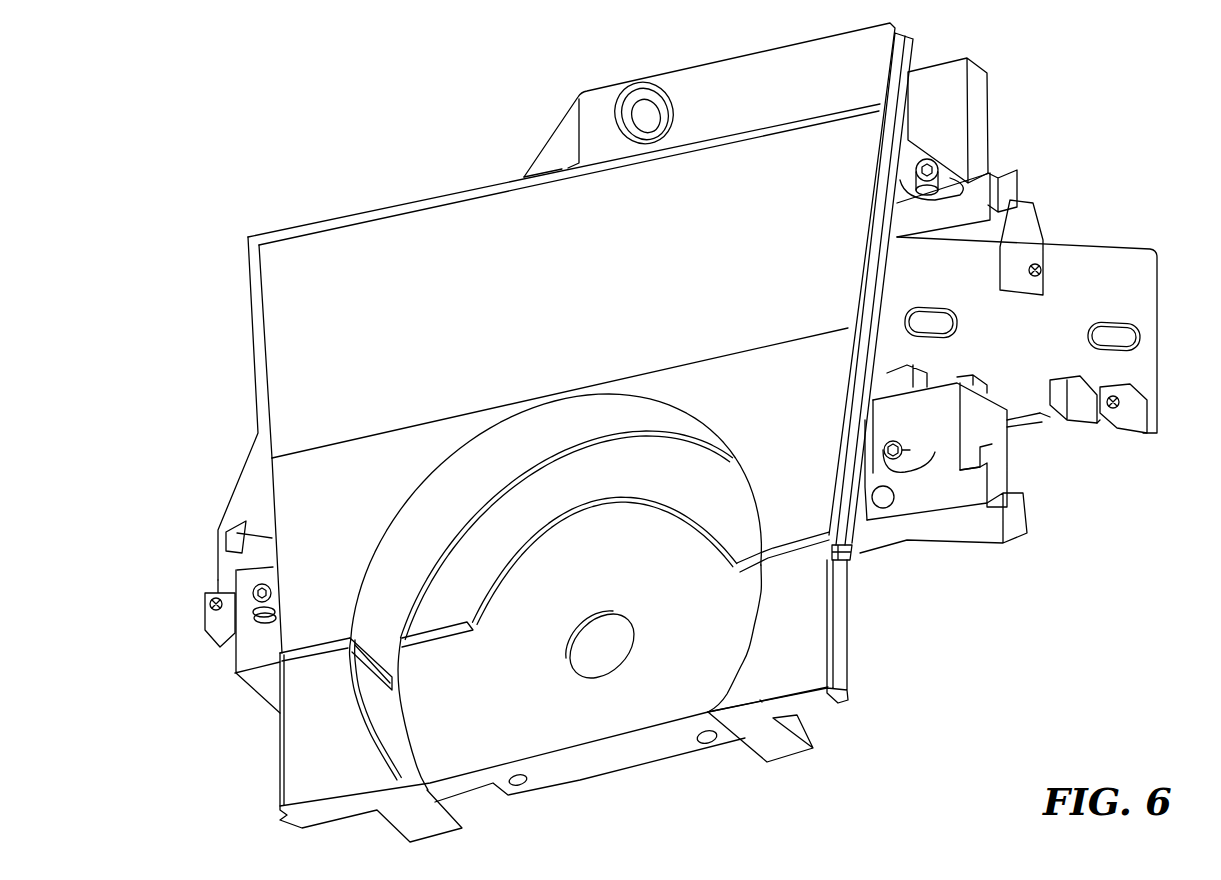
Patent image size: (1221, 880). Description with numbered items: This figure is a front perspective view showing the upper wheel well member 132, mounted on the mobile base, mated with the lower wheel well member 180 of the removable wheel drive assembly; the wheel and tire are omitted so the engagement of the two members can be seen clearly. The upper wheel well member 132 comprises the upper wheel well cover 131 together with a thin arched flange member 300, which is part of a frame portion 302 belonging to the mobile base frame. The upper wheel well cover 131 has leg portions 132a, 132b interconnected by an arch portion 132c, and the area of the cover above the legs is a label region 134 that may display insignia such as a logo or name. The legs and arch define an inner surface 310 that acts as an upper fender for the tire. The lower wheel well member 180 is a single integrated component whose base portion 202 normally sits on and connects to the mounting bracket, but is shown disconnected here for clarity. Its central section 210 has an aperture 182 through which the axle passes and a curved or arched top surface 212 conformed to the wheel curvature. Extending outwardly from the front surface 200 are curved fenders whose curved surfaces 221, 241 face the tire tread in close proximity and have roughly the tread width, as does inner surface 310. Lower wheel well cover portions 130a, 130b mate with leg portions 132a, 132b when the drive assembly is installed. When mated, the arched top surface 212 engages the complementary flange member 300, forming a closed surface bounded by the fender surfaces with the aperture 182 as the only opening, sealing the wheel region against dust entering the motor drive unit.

The upper wheel well cover 131 is at (514, 119).
The label region 134 is at (578, 270).
The upper wheel well member 132 is at (406, 573).
The leg portion 132a is at (352, 507).
The leg portion 132b is at (828, 397).
The arch portion 132c is at (550, 398).
The arched flange member 300 is at (650, 477).
The inner surface 310 is at (504, 462).
The central section 210 is at (640, 562).
The curved or arched top surface 212 is at (577, 522).
The curved surface 241 is at (757, 607).
The aperture 182 is at (598, 657).
The curved surface 221 is at (382, 720).
The front surface 200 is at (650, 700).
The base portion 202 is at (560, 777).
The lower wheel well member 180 is at (797, 782).
The lower wheel well cover portion 130a is at (349, 771).
The lower wheel well cover portion 130b is at (809, 669).
The frame portion 302 is at (997, 440).